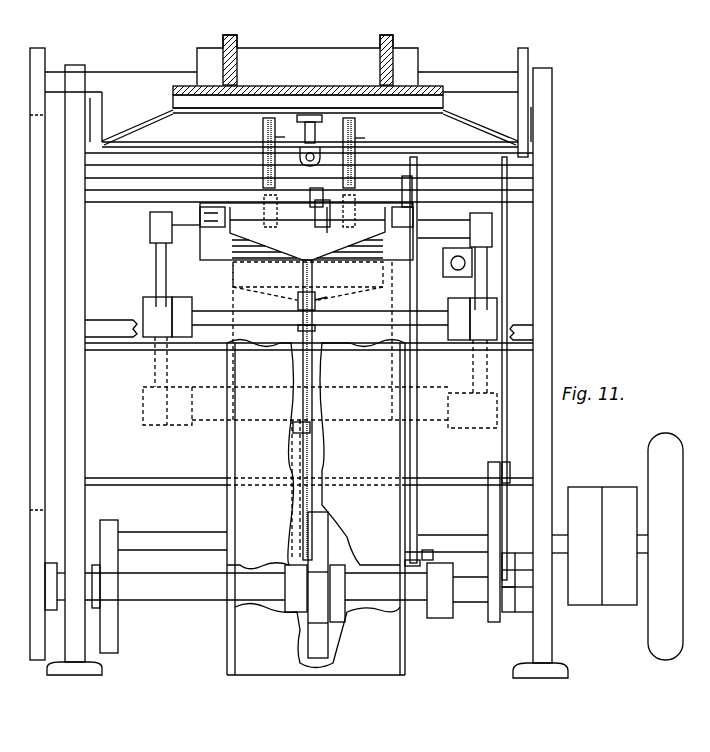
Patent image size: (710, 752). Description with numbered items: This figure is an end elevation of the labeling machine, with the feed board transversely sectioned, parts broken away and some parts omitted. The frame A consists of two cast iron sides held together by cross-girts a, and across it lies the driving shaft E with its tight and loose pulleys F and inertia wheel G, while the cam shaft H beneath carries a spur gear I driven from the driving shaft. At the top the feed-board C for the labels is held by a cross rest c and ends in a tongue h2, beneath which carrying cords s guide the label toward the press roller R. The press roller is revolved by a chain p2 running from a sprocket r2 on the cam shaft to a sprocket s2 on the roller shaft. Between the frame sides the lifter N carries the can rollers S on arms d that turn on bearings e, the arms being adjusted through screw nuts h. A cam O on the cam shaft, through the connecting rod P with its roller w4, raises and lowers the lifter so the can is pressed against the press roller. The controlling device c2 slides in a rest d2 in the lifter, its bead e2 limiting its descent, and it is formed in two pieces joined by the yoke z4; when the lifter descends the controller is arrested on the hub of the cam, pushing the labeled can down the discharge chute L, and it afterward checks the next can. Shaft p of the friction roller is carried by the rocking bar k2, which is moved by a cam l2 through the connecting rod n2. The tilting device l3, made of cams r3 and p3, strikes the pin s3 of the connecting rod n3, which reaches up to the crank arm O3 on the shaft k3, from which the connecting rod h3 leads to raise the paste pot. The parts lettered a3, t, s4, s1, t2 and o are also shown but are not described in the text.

The chain p2 is at (33, 372).
The frame A is at (307, 371).
The sprocket s2 is at (40, 92).
The press roller R is at (307, 60).
The feed-board C is at (178, 98).
The cross rest c is at (228, 117).
The tongue h2 is at (308, 116).
The hanger with eye a3 is at (313, 154).
The carrying cords s is at (263, 127).
The rod guide t is at (325, 137).
The rocking bar k2 is at (423, 152).
The frame bar s4 is at (309, 178).
The shaft k3 is at (125, 198).
The rollers S is at (207, 240).
The hopper side block s1 is at (223, 217).
The controlling device c2 is at (272, 503).
The connecting rod h3 is at (335, 227).
The block t2 is at (320, 207).
The crank arm O3 is at (402, 201).
The arms d is at (157, 277).
The screw nuts h is at (443, 257).
The shaft p is at (458, 263).
The lifter N is at (214, 302).
The cross-girts a is at (104, 330).
The bead e2 is at (302, 293).
The rest d2 is at (315, 307).
The bearings e is at (309, 330).
The connecting rod n3 is at (417, 466).
The yoke z4 is at (312, 428).
The discharge chute L is at (316, 508).
The driving shaft E is at (303, 542).
The cam shaft H is at (272, 587).
The spur gear I is at (113, 637).
The sprocket r2 is at (35, 627).
The cam O is at (318, 585).
The roller w4 is at (317, 602).
The connecting rod P is at (343, 598).
The connecting rod n2 is at (493, 513).
The pin s3 is at (430, 548).
The tilting device l3 is at (443, 608).
The cam r3 is at (443, 572).
The cam p3 is at (425, 597).
The bearing block o is at (517, 582).
The cam l2 is at (510, 612).
The tight and loose pulleys F is at (600, 546).
The inertia wheel G is at (665, 546).